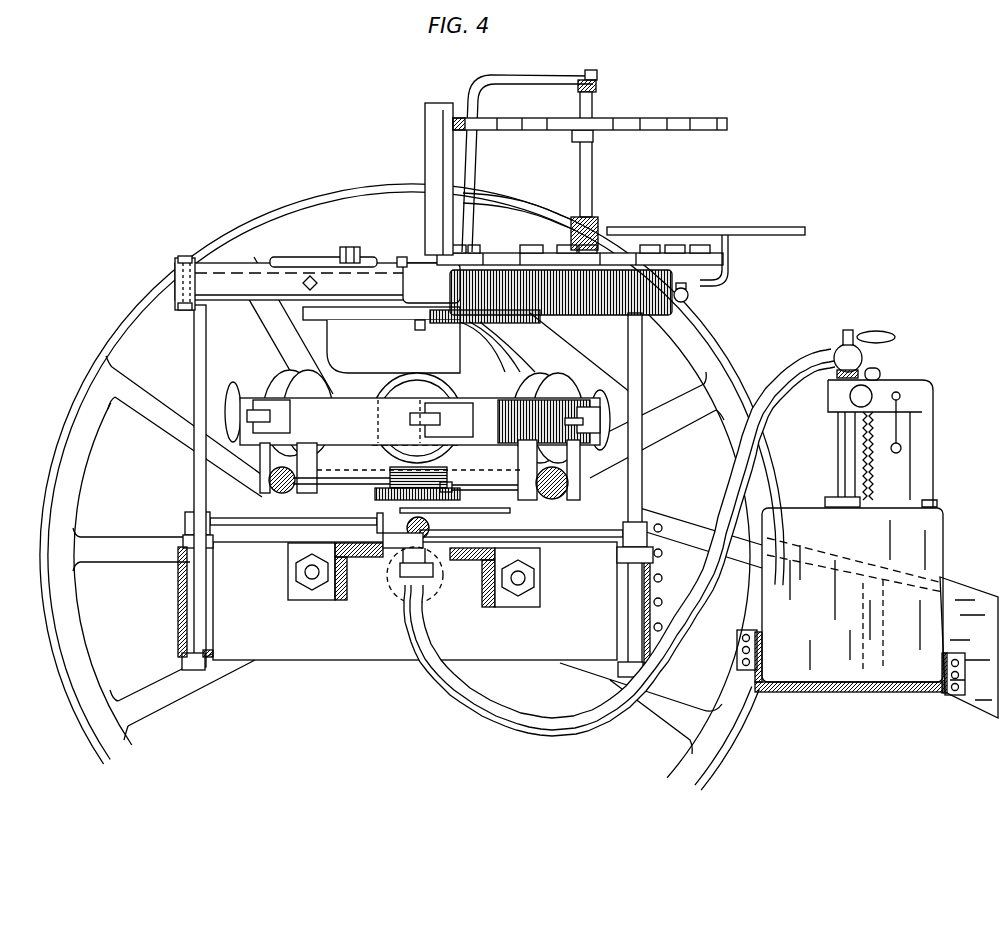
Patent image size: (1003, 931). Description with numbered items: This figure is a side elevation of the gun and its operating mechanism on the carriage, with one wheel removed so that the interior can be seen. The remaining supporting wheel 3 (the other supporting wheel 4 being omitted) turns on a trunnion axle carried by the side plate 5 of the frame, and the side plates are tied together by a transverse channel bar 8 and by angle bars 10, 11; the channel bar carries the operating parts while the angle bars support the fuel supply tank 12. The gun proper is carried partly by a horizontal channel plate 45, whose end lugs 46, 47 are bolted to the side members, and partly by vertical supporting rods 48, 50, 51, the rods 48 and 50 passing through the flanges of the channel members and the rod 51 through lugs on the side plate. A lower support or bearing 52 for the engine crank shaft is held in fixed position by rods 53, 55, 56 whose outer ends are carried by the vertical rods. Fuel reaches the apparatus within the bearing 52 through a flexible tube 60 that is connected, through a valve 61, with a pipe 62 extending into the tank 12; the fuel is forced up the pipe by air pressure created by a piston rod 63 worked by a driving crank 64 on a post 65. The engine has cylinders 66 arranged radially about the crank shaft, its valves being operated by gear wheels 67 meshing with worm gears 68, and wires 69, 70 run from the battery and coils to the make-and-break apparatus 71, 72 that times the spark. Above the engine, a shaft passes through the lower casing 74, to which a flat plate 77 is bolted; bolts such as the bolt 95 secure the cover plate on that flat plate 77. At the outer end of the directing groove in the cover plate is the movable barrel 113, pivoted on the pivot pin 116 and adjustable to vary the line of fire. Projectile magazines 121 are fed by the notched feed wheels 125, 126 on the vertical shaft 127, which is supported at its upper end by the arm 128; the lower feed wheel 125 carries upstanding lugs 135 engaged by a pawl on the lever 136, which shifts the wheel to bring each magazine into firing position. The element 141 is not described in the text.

The supporting wheel 3 is at (90, 433).
The supporting wheel 4 is at (623, 557).
The side plate 5 is at (355, 660).
The transverse channel bar 8 is at (182, 612).
The angle bar 10 is at (778, 690).
The angle bar 11 is at (917, 693).
The fuel supply tank 12 is at (925, 548).
The channel plate 45 is at (363, 557).
The lug 46 is at (293, 598).
The lug 47 is at (510, 598).
The vertical supporting rod 48 is at (207, 363).
The vertical supporting rod 50 is at (637, 371).
The vertical supporting rod 51 is at (418, 322).
The lower support or bearing 52 is at (418, 492).
The rod 53 is at (245, 528).
The rod 55 is at (568, 538).
The rod 56 is at (413, 558).
The flexible tube 60 is at (423, 662).
The valve 61 is at (842, 350).
The pipe 62 is at (840, 430).
The piston rod 63 is at (876, 487).
The driving crank 64 is at (903, 397).
The post 65 is at (930, 436).
The cylinder 66 is at (277, 377).
The gear wheel 67 is at (283, 490).
The worm gear 68 is at (415, 493).
The wire 69 is at (668, 530).
The wire 70 is at (697, 545).
The make-and-break apparatus 71 is at (460, 508).
The make-and-break apparatus 72 is at (392, 500).
The lower casing 74 is at (419, 340).
The flat plate 77 is at (622, 303).
The bolt 95 is at (688, 318).
The barrel 113 is at (208, 283).
The pivot pin 116 is at (357, 253).
The projectile magazine 121 is at (432, 152).
The lower feed wheel 125 is at (698, 262).
The notched wheel 126 is at (676, 125).
The vertical shaft 127 is at (592, 105).
The arm 128 is at (535, 77).
The upstanding lug 135 is at (676, 255).
The lever 136 is at (715, 233).
The rod 141 is at (737, 248).